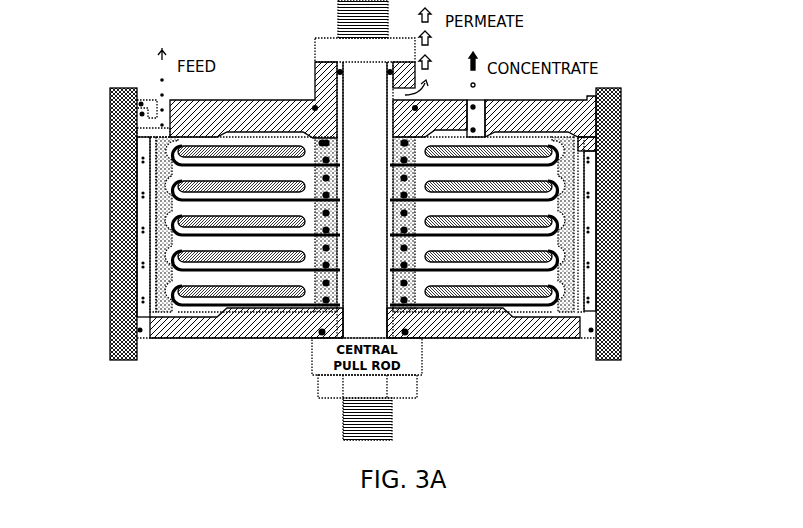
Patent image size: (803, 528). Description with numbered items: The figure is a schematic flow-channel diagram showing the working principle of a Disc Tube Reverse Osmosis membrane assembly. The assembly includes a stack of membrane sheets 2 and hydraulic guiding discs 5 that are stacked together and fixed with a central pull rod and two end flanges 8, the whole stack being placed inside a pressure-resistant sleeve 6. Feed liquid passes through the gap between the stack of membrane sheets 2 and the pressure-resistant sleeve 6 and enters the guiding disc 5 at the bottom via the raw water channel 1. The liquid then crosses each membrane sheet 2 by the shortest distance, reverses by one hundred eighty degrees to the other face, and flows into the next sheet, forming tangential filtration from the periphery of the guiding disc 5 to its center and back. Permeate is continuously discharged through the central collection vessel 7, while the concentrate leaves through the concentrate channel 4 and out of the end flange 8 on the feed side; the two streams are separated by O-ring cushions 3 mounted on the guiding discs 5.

The raw water channel 1 is at (150, 160).
The membrane sheet 2 is at (150, 240).
The O-ring cushion 3 is at (150, 302).
The concentrate channel 4 is at (732, 146).
The hydraulic guiding disc 5 is at (732, 198).
The pressure-resistant sleeve 6 is at (732, 245).
The central collection vessel 7 is at (732, 288).
The end flange 8 is at (732, 110).